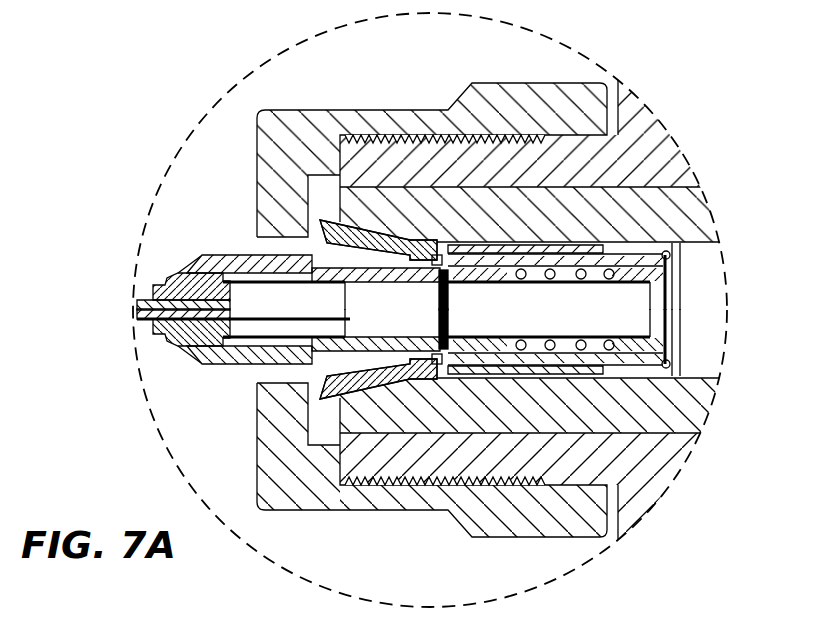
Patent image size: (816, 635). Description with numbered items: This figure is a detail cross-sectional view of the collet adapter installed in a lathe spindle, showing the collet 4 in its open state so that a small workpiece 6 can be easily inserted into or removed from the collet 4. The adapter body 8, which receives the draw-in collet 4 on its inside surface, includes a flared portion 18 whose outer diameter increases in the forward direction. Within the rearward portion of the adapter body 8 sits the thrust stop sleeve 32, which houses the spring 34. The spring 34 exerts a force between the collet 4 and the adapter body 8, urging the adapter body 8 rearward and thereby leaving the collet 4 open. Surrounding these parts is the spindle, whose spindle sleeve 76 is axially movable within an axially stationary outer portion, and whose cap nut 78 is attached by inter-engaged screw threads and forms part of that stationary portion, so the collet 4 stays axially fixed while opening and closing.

The collet 4 is at (173, 266).
The workpiece 6 is at (141, 300).
The adapter body 8 is at (223, 267).
The flared portion 18 is at (386, 222).
The thrust stop sleeve 32 is at (490, 255).
The spring 34 is at (578, 250).
The spindle sleeve 76 is at (350, 205).
The cap nut 78 is at (325, 132).